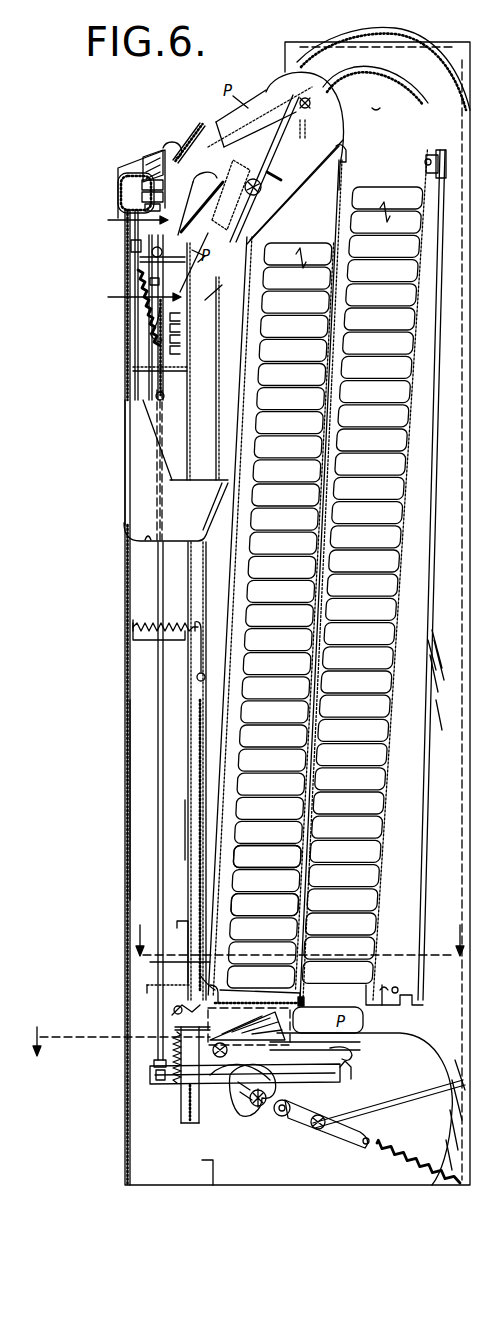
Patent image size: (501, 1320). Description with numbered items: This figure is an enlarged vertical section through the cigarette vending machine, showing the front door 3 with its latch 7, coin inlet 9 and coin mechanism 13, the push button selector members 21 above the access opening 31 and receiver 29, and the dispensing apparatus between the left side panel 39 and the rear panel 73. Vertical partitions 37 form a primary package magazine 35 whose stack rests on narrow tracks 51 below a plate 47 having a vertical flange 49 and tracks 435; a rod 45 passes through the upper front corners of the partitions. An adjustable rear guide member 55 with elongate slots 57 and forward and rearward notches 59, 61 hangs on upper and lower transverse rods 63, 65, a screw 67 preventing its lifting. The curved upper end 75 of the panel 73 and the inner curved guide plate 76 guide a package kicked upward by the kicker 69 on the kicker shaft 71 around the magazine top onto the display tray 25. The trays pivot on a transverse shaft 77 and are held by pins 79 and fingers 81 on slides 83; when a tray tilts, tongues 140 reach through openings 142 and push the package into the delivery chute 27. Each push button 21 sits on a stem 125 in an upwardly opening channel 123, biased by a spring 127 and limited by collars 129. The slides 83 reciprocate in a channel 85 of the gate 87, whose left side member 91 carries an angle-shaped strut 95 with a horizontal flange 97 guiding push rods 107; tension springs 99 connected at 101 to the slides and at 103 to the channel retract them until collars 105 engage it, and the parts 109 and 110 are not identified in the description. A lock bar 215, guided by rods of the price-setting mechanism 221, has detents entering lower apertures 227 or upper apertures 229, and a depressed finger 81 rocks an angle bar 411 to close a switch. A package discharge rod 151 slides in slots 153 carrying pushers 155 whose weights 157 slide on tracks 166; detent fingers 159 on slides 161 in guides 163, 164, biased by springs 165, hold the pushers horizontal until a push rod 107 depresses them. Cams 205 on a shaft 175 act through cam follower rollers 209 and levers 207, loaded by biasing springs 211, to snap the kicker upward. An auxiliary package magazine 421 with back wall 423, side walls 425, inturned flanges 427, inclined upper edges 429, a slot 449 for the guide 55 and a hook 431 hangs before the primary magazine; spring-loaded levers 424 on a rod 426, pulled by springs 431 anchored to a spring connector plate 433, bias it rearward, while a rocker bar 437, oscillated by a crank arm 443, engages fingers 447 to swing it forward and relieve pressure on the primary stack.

The left side panel 39 is at (290, 52).
The rear panel 73 is at (471, 498).
The vertical partitions 37 is at (488, 352).
The curved upper end of rear panel 75 is at (352, 30).
The inner curved guide plate 76 is at (372, 80).
The transverse shaft 77 is at (311, 108).
The display tray 25 is at (222, 134).
The pins 79 is at (284, 128).
The openings in tray 142 is at (252, 166).
The tongues 140 is at (267, 186).
The fingers 81 is at (198, 178).
The inclined upper edge 429 is at (305, 180).
The side walls of auxiliary magazine 425 is at (315, 223).
The inturned flanges 427 is at (255, 240).
The auxiliary package magazine 421 is at (313, 474).
The slot in back wall 449 is at (296, 859).
The back wall of auxiliary magazine 423 is at (298, 909).
The rod 45 is at (360, 165).
The primary package magazine 35 is at (378, 150).
The elongate slots 57 is at (436, 174).
The adjustable rear guide member 55 is at (424, 630).
The upper transverse rod 63 is at (441, 150).
The screw 67 is at (427, 158).
The hook 431 is at (345, 148).
The coin mechanism 13 is at (131, 258).
The push button selector member 21 is at (150, 160).
The stem 125 is at (145, 164).
The spring 127 is at (124, 184).
The upwardly opening channel 123 is at (142, 186).
The collars 129 is at (145, 200).
The rod 109 is at (135, 240).
The block 110 is at (131, 246).
The spring connection to channel 103 is at (149, 258).
The upper apertures 229 is at (138, 270).
The lower apertures 227 is at (150, 281).
The tension springs 99 is at (150, 322).
The slides 83 is at (150, 336).
The spring connection to slide 101 is at (156, 360).
The channel 85 is at (140, 369).
The collars 105 is at (156, 394).
The price-setting mechanism 221 is at (184, 356).
The lock bar 215 is at (188, 278).
The angle bar 411 is at (206, 258).
The delivery chute 27 is at (214, 306).
The access opening 31 is at (124, 460).
The front door 3 is at (124, 795).
The receiver 29 is at (128, 548).
The left side member of gate 91 is at (193, 583).
The push rods 107 is at (157, 730).
The spring connector plate 433 is at (135, 640).
The transverse rod 426 is at (197, 677).
The gate 87 is at (182, 830).
The spring-loaded levers 424 is at (198, 858).
The angle-shaped strut 95 is at (178, 941).
The latch 7 is at (297, 931).
The rocker bar 437 is at (222, 985).
The tracks on plate 435 is at (262, 991).
The vertical flange 49 is at (303, 1002).
The fingers of auxiliary magazine 447 is at (200, 978).
The horizontal flange of strut 97 is at (147, 987).
The crank arm 443 is at (172, 1010).
The forward notches 59 is at (384, 984).
The rearward notches 61 is at (398, 988).
The lower transverse rod 65 is at (392, 998).
The coin inlet 9 is at (119, 1033).
The upper guide 163 is at (185, 1027).
The springs 165 is at (175, 1052).
The slide 161 is at (180, 1105).
The lower guide 164 is at (180, 1120).
The detent fingers 159 is at (320, 1080).
The weight 157 is at (220, 1080).
The plate 47 is at (250, 1015).
The package discharge rod 151 is at (262, 1038).
The pushers 155 is at (290, 1016).
The elongate horizontal slots 153 is at (357, 1057).
The tracks 166 is at (359, 1072).
The cams 205 is at (242, 1110).
The transverse shaft 175 is at (258, 1107).
The cam follower rollers 209 is at (282, 1116).
The cam follower levers 207 is at (348, 1140).
The kicker shaft 71 is at (318, 1130).
The kicker 69 is at (400, 1100).
The tracks 51 is at (440, 1068).
The biasing springs 211 is at (412, 1162).